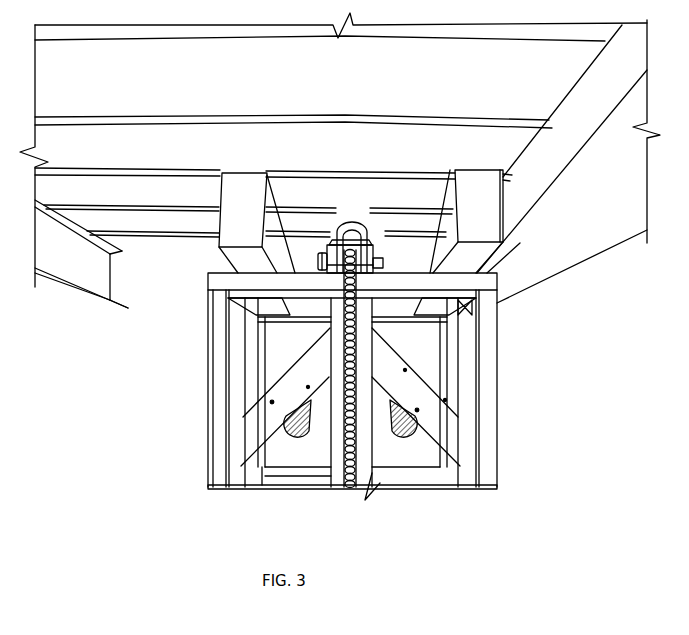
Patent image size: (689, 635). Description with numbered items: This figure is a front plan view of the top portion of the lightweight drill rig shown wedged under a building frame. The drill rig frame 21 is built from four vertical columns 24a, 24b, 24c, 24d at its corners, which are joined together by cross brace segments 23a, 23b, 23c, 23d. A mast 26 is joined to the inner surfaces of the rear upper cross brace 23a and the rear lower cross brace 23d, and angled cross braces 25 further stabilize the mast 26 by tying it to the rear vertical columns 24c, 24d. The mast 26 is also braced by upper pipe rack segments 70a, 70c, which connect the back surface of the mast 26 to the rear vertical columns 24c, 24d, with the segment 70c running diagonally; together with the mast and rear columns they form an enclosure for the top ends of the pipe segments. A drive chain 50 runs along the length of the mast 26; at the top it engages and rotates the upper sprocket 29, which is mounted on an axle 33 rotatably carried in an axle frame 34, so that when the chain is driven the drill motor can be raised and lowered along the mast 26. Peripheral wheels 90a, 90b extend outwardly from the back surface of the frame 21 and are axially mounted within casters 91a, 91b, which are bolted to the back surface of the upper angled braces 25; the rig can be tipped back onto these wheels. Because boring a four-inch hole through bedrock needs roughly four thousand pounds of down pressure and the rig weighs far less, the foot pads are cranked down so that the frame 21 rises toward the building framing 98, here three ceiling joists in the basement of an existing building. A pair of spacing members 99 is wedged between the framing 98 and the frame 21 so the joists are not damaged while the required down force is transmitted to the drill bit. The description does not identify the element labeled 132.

The drill rig frame 21 is at (490, 484).
The rear upper cross brace 23a is at (230, 288).
The lower cross brace segment 23b is at (238, 290).
The lower cross brace 23c is at (428, 322).
The rear lower cross brace 23d is at (482, 320).
The vertical column 24a is at (213, 403).
The vertical column 24b is at (490, 397).
The rear vertical column 24c is at (244, 375).
The rear vertical column 24d is at (450, 361).
The angled cross brace 25 is at (288, 392).
The mast 26 is at (333, 326).
The upper sprocket 29 is at (367, 260).
The axle 33 is at (318, 264).
The axle frame 34 is at (365, 255).
The drive chain 50 is at (343, 441).
The upper pipe rack segment 70a is at (272, 460).
The upper pipe rack segment 70c is at (297, 489).
The peripheral wheel 90a is at (283, 427).
The peripheral wheel 90b is at (428, 428).
The caster 91a is at (270, 403).
The caster 91b is at (420, 411).
The building framing 98 is at (148, 183).
The spacing member 99 is at (264, 186).
The ceiling beam 132 is at (55, 265).